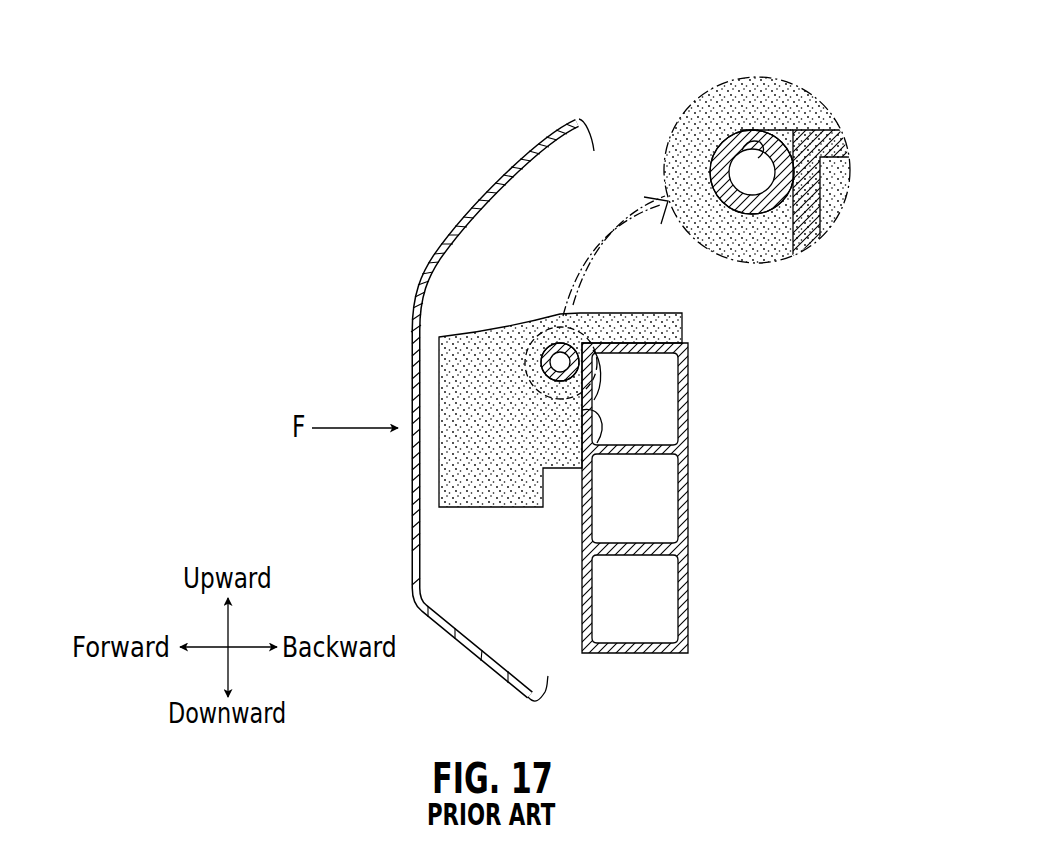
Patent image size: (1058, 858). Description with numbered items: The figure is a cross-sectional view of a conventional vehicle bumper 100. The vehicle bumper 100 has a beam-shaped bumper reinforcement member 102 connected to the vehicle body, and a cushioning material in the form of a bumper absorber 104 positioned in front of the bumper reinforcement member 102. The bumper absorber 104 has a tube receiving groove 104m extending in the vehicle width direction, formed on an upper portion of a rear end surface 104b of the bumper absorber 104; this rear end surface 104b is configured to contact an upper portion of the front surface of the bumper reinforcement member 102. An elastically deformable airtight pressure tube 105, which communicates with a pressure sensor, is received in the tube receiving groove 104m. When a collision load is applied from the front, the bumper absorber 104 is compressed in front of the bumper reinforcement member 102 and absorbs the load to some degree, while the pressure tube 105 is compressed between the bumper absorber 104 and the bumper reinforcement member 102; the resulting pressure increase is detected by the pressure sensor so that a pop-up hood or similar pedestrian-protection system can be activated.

The vehicle bumper 100 is at (433, 147).
The bumper reinforcement member 102 is at (694, 508).
The bumper absorber 104 is at (491, 331).
The tube receiving groove 104m is at (562, 352).
The rear end surface 104b is at (592, 425).
The pressure tube 105 is at (545, 378).